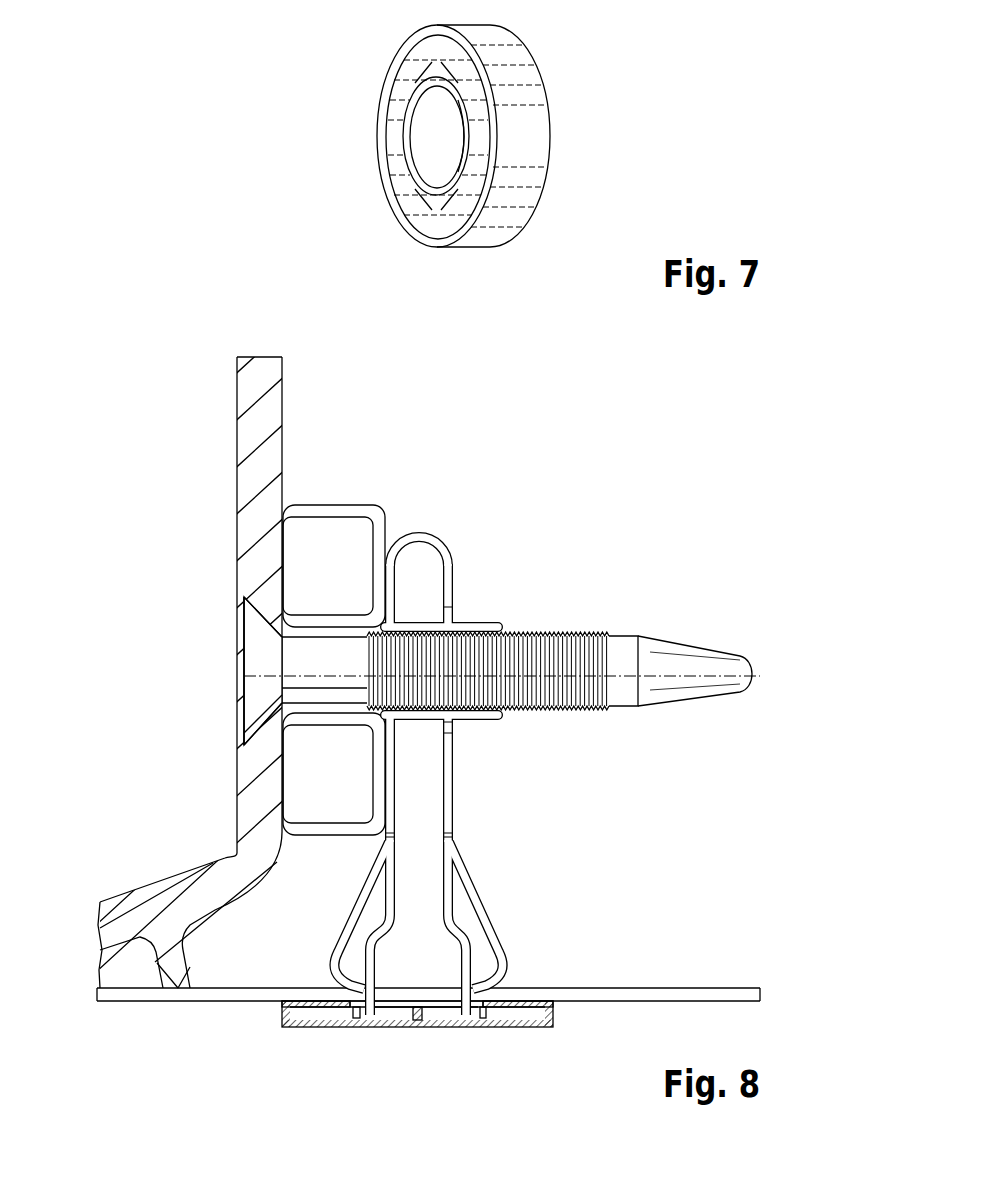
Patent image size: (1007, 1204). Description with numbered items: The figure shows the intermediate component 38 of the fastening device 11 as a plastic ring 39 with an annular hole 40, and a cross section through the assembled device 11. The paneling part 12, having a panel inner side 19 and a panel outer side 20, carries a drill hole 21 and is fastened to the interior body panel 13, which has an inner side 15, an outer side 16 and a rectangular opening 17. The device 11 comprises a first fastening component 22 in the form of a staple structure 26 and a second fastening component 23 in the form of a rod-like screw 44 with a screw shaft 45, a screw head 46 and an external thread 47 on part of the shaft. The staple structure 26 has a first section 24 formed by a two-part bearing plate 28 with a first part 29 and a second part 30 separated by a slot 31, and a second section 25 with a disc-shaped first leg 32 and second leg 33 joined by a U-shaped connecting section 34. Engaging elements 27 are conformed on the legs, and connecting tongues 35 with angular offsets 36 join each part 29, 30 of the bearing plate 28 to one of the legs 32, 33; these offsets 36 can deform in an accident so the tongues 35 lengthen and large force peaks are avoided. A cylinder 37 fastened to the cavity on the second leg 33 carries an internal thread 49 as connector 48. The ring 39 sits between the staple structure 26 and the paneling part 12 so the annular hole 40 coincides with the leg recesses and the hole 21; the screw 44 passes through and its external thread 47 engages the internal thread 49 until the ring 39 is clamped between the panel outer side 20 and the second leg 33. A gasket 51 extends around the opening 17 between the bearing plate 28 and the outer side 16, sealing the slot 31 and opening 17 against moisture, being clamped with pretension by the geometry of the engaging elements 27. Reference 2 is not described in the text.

In FIG. 8, the second component 2 is at (420, 1015).
In FIG. 8, the device 11 is at (654, 548).
In FIG. 8, the paneling part 12 is at (198, 656).
In FIG. 8, the interior body panel 13 is at (420, 1015).
In FIG. 8, the inner side 15 is at (118, 988).
In FIG. 8, the outer side 16 is at (120, 1003).
In FIG. 8, the opening 17 is at (388, 1001).
In FIG. 8, the panel inner side 19 is at (237, 398).
In FIG. 8, the panel outer side 20 is at (284, 398).
In FIG. 8, the drill hole 21 is at (242, 718).
In FIG. 8, the first fastening component 22 is at (482, 517).
In FIG. 8, the second fastening component 23 is at (451, 672).
In FIG. 8, the first section 24 is at (434, 1015).
In FIG. 8, the second section 25 is at (429, 741).
In FIG. 8, the staple structure 26 is at (482, 517).
In FIG. 8, the engaging elements 27 is at (355, 912).
In FIG. 8, the bearing plate 28 is at (434, 1015).
In FIG. 8, the first part 29 is at (510, 1020).
In FIG. 8, the second part 30 is at (317, 1018).
In FIG. 8, the slot 31 is at (418, 1020).
In FIG. 8, the first leg 32 is at (455, 575).
In FIG. 8, the second leg 33 is at (388, 572).
In FIG. 8, the U-shaped connecting section 34 is at (457, 542).
In FIG. 8, the connecting tongues 35 is at (455, 915).
In FIG. 8, the angular offset 36 is at (458, 925).
In FIG. 8, the cylinder 37 is at (480, 622).
In FIG. 7, the intermediate component 38 is at (499, 136).
In FIG. 8, the intermediate component 38 is at (349, 639).
In FIG. 7, the ring 39 is at (499, 136).
In FIG. 8, the ring 39 is at (343, 507).
In FIG. 7, the annular hole 40 is at (430, 156).
In FIG. 8, the annular hole 40 is at (278, 648).
In FIG. 8, the screw 44 is at (451, 672).
In FIG. 8, the screw shaft 45 is at (690, 652).
In FIG. 8, the screw head 46 is at (250, 666).
In FIG. 8, the external thread 47 is at (515, 678).
In FIG. 8, the connector 48 is at (515, 678).
In FIG. 8, the internal thread 49 is at (503, 645).
In FIG. 8, the gasket 51 is at (290, 1000).